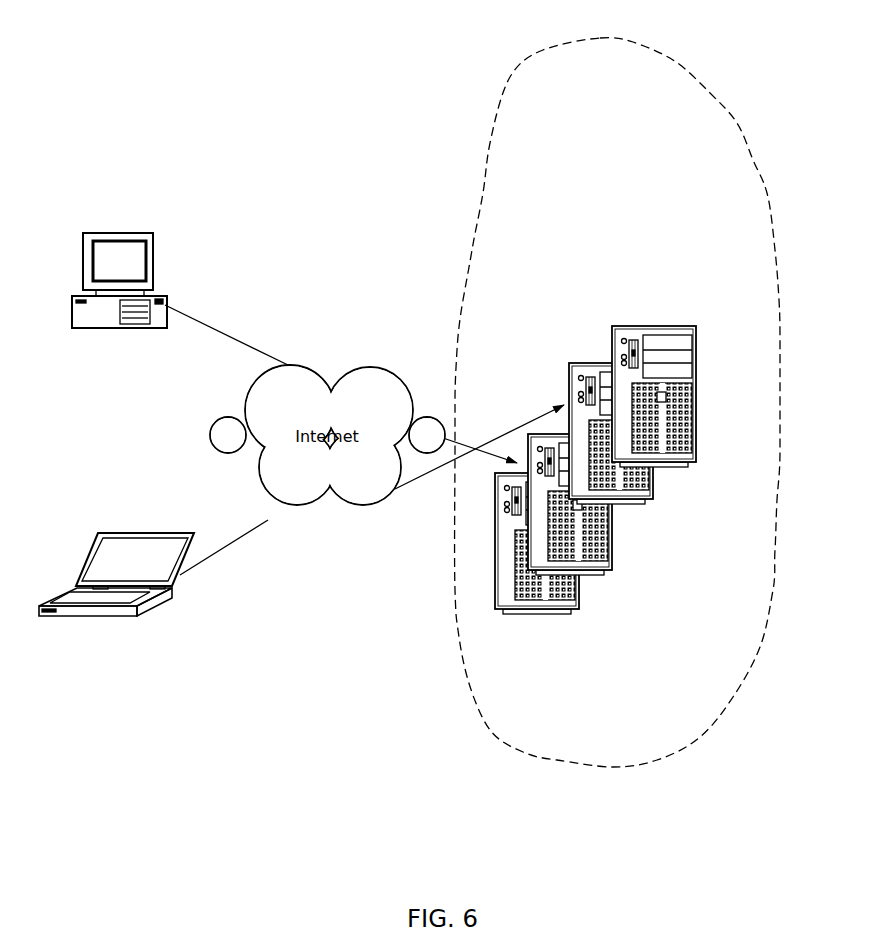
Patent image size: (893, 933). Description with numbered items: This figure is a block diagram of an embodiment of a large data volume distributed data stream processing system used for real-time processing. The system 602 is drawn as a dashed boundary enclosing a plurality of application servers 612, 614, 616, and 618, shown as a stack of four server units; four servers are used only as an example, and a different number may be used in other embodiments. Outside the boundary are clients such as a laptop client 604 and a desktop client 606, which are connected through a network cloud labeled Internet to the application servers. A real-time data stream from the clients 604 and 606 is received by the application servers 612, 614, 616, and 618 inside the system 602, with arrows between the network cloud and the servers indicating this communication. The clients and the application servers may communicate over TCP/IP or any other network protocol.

The system 602 is at (487, 52).
The client 604 is at (138, 532).
The client 606 is at (153, 245).
The application server 612 is at (697, 430).
The application server 614 is at (655, 493).
The application server 616 is at (615, 540).
The application server 618 is at (582, 600).